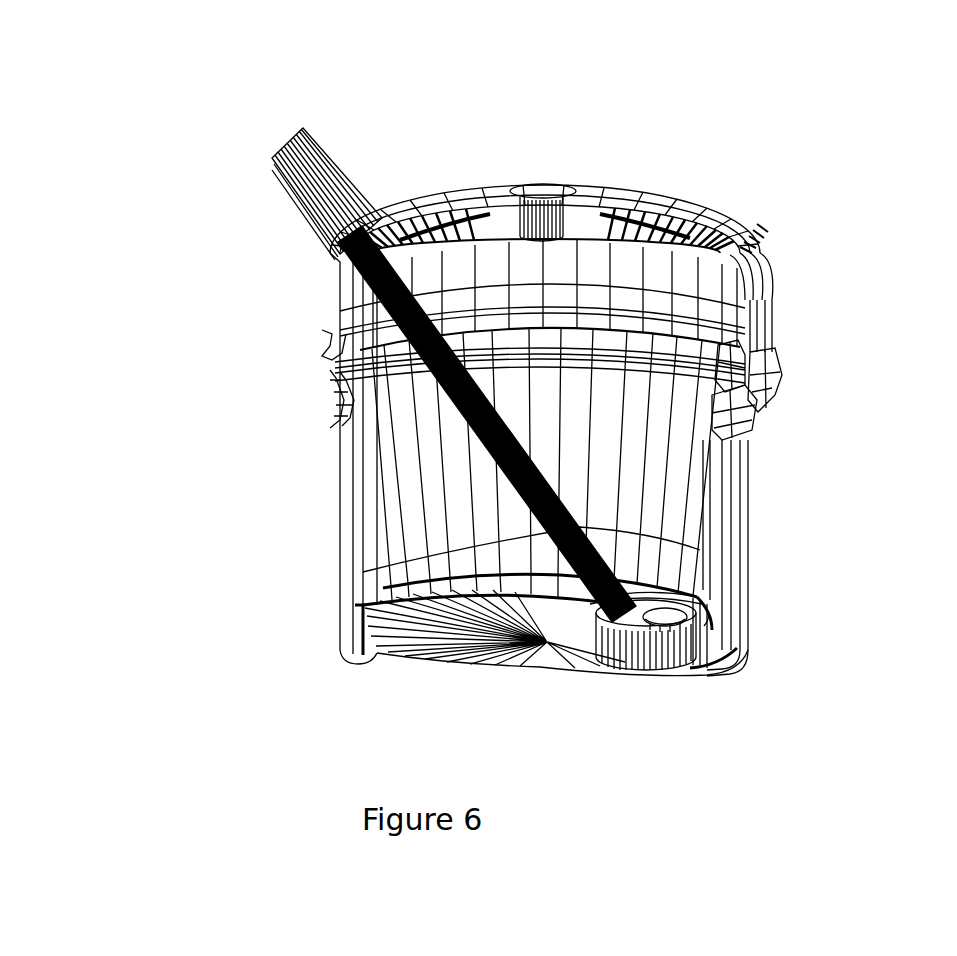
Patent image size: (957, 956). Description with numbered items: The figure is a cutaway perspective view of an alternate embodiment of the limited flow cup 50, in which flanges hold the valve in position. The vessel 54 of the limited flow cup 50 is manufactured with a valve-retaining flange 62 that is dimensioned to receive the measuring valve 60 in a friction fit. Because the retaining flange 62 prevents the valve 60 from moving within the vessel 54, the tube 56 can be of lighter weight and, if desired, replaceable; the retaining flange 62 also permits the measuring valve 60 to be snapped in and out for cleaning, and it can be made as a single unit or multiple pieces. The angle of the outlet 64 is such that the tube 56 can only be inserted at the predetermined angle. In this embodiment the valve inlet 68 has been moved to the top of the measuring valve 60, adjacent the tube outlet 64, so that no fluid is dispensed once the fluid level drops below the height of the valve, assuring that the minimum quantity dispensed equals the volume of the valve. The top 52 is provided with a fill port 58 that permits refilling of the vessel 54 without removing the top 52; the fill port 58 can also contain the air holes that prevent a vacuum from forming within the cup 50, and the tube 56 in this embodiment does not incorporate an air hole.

The limited flow cup 50 is at (783, 312).
The top 52 is at (622, 165).
The vessel 54 is at (325, 472).
The tube 56 is at (322, 338).
The fill port 58 is at (538, 186).
The measuring valve 60 is at (628, 668).
The valve-retaining flange 62 is at (698, 677).
The outlet 64 is at (698, 592).
The valve inlet 68 is at (703, 608).